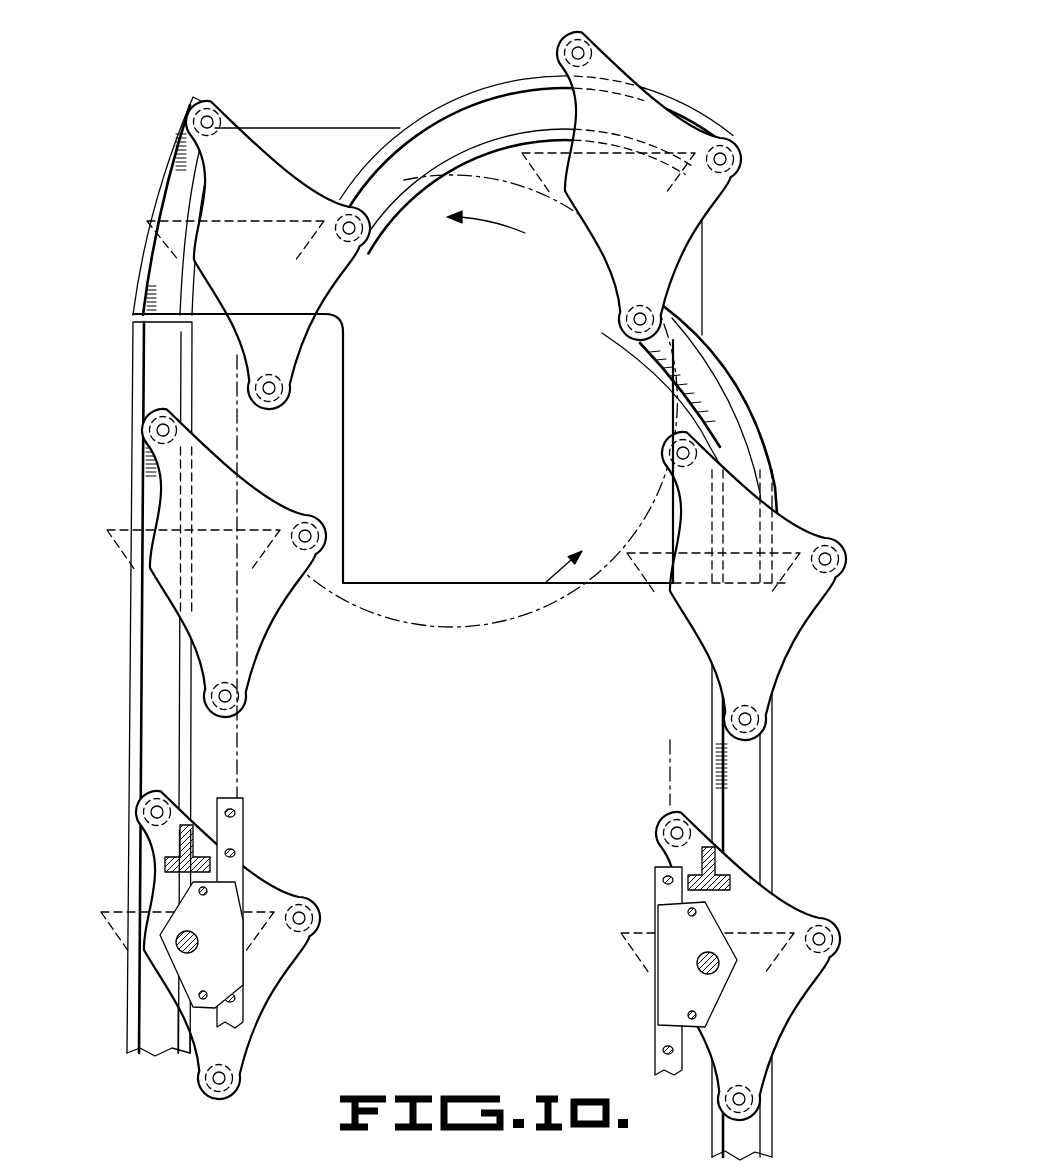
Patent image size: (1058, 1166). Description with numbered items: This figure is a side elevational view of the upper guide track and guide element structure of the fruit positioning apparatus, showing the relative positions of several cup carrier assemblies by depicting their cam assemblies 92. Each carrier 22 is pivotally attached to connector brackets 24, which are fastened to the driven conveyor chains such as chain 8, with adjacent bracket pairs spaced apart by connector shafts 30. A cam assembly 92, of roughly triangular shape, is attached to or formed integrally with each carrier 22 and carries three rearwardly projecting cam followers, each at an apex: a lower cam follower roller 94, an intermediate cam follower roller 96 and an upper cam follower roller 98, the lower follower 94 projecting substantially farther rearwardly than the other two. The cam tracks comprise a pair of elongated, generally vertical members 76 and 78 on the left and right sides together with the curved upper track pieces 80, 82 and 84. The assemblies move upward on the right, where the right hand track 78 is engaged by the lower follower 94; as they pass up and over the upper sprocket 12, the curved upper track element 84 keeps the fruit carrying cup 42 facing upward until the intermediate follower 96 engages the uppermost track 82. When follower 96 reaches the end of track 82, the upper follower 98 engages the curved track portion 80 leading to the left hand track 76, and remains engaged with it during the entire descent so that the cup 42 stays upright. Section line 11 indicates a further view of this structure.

The driven chain 8 is at (245, 812).
The section line 11- 11 is at (96, 322).
The upper sprocket 12 is at (470, 628).
The carrier 22 is at (176, 845).
The connector bracket 24 is at (180, 972).
The connector shaft 30 is at (688, 911).
The fruit carrying cup 42 is at (530, 79).
The left hand cam track member 76 is at (148, 706).
The right hand cam track member 78 is at (753, 805).
The curved upper track piece 80 is at (172, 174).
The uppermost cam track 82 is at (455, 120).
The upper cam track element 84 is at (723, 400).
The cam assembly 92 is at (284, 150).
The lower cam follower roller 94 is at (615, 320).
The intermediate cam follower roller 96 is at (745, 165).
The upper cam follower roller 98 is at (212, 99).